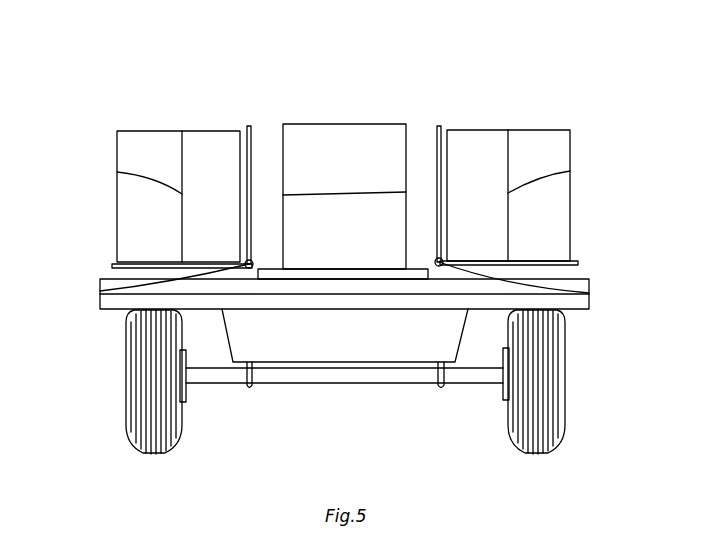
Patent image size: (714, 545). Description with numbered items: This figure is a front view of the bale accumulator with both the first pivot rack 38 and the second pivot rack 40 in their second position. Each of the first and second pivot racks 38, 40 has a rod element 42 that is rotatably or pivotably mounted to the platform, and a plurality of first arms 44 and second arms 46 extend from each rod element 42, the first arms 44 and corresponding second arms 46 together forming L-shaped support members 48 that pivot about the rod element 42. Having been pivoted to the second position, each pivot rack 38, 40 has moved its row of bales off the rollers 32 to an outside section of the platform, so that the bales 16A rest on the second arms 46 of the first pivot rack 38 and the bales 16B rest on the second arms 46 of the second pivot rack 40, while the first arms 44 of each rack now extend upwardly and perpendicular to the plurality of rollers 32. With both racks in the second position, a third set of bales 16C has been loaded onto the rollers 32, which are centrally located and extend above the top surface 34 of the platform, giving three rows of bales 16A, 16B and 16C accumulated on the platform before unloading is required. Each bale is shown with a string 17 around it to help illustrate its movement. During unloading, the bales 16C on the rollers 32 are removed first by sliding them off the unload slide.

The bales 16A is at (550, 130).
The bales 16B is at (153, 131).
The bales 16C is at (317, 124).
The string 17 is at (117, 172).
The rollers 32 is at (416, 279).
The top surface 34 is at (110, 279).
The first pivot rack 38 is at (497, 73).
The second pivot rack 40 is at (86, 80).
The rod element 42 is at (100, 291).
The first arms 44 is at (247, 185).
The second arms 46 is at (135, 264).
The L-shaped support members 48 is at (250, 125).